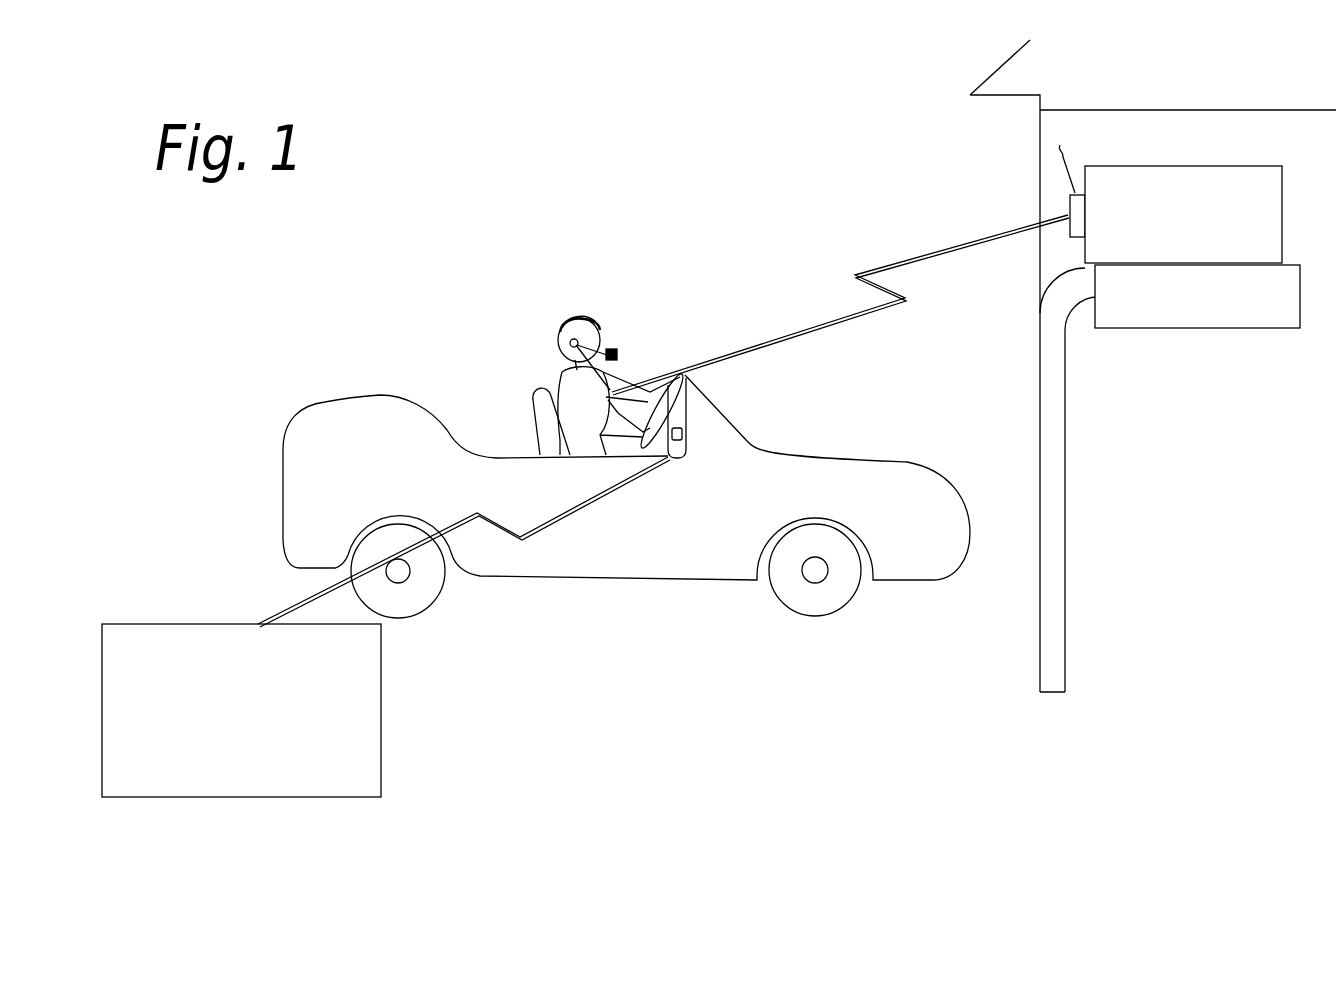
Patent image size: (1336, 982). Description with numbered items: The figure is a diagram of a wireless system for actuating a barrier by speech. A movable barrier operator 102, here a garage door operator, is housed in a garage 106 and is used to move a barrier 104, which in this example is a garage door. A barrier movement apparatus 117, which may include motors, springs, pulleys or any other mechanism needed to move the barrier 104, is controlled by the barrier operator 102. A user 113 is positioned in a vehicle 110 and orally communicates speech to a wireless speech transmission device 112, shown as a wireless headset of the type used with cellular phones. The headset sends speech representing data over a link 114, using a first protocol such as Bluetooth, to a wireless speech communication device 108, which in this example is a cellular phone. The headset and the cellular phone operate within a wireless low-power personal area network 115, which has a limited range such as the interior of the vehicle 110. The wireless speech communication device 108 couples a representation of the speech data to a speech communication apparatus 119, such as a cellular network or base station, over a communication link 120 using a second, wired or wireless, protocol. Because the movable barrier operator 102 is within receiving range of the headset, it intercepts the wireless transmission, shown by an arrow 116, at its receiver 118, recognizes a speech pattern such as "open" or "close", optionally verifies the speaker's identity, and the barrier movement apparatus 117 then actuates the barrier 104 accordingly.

The movable barrier operator 102 is at (1255, 167).
The barrier 104 is at (1067, 507).
The garage 106 is at (993, 73).
The wireless speech communication device 108 is at (687, 450).
The vehicle 110 is at (340, 400).
The wireless speech transmission device 112 is at (573, 338).
The user 113 is at (553, 380).
The link 114 is at (613, 383).
The wireless low-power personal area network 115 is at (516, 346).
The arrow 116 is at (820, 313).
The barrier movement apparatus 117 is at (1170, 329).
The receiver 118 is at (1068, 212).
The speech communication apparatus 119 is at (132, 623).
The communication link 120 is at (282, 612).